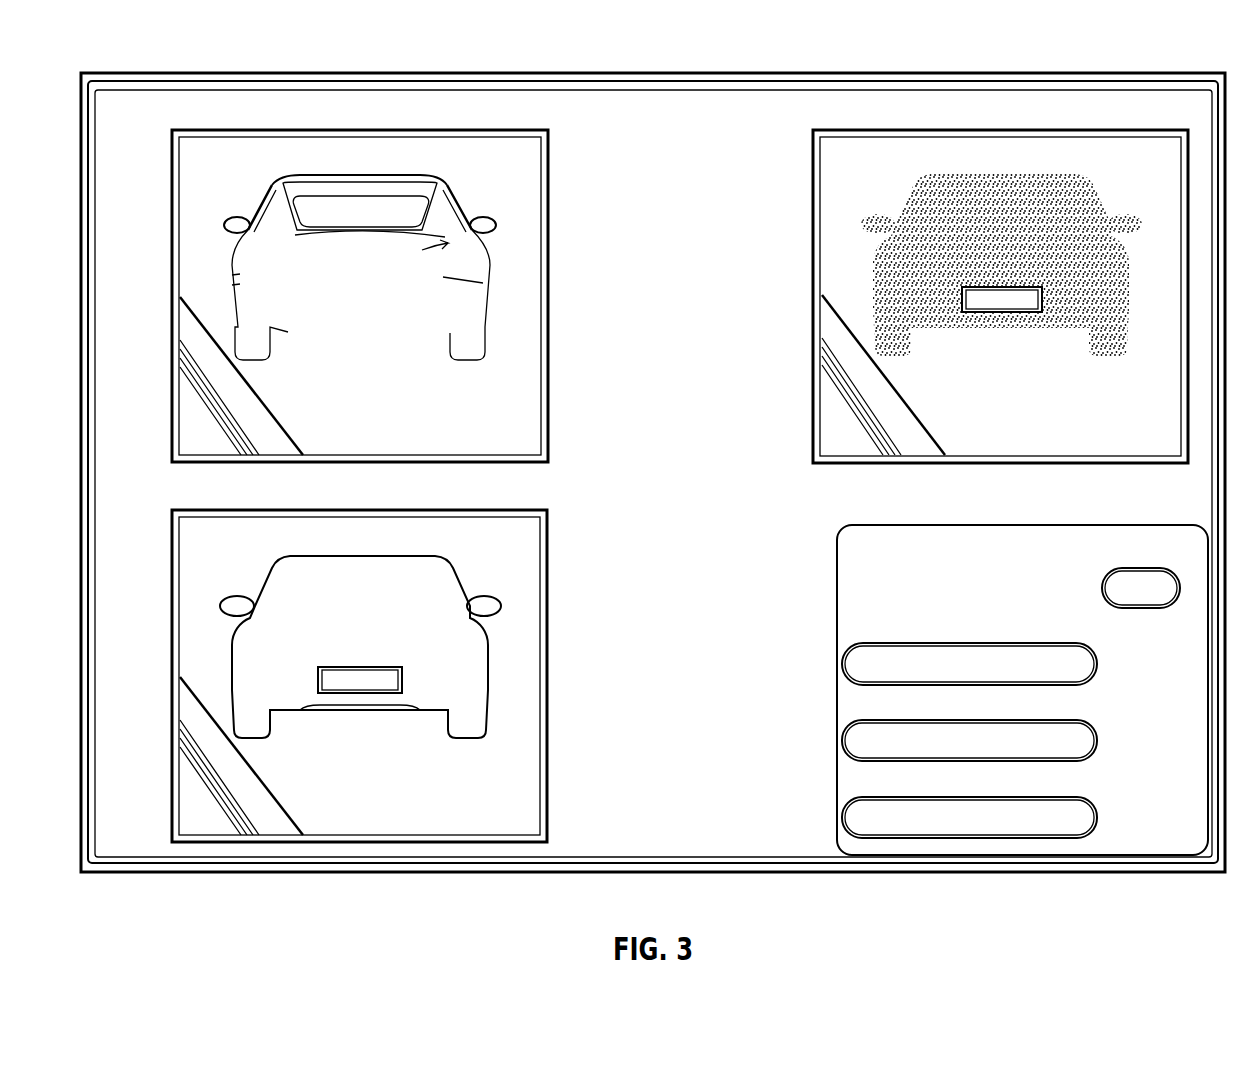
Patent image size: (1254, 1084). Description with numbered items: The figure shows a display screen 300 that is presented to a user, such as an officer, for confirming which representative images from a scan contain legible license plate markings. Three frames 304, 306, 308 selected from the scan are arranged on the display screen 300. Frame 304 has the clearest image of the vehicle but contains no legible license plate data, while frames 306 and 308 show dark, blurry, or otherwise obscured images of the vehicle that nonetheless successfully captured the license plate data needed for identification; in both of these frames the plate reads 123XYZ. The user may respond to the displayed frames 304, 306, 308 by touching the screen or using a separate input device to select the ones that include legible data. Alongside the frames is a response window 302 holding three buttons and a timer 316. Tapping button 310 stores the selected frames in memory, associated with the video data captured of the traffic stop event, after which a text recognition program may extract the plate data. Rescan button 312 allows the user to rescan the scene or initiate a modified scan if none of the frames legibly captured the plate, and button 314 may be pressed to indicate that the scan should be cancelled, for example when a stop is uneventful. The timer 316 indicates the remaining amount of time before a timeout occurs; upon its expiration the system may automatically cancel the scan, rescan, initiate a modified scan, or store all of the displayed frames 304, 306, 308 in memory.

The display screen 300 is at (148, 73).
The response window 302 is at (1128, 525).
The frame 304 is at (242, 130).
The frame 306 is at (240, 510).
The frame 308 is at (1120, 130).
The button 310 is at (1028, 797).
The Rescan button 312 is at (1028, 720).
The button 314 is at (1028, 643).
The timer 316 is at (1132, 568).